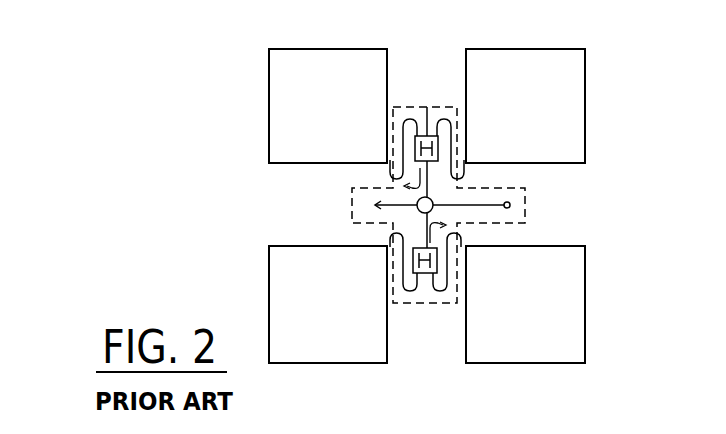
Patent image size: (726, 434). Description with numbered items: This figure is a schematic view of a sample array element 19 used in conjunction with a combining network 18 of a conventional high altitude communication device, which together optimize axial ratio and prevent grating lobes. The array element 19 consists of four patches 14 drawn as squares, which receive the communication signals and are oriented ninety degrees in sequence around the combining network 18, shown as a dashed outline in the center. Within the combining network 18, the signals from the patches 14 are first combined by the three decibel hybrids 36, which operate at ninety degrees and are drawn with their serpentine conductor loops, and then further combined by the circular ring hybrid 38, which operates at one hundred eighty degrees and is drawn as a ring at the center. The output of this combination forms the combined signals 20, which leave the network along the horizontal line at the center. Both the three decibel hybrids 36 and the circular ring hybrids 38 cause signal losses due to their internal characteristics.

The patches 14 is at (269, 106).
The sample array element 19 is at (388, 50).
The combining network 18 is at (505, 223).
The 3 db hybrids 36 is at (427, 107).
The combined signals 20 is at (497, 203).
The circular ring hybrids 38 is at (417, 208).